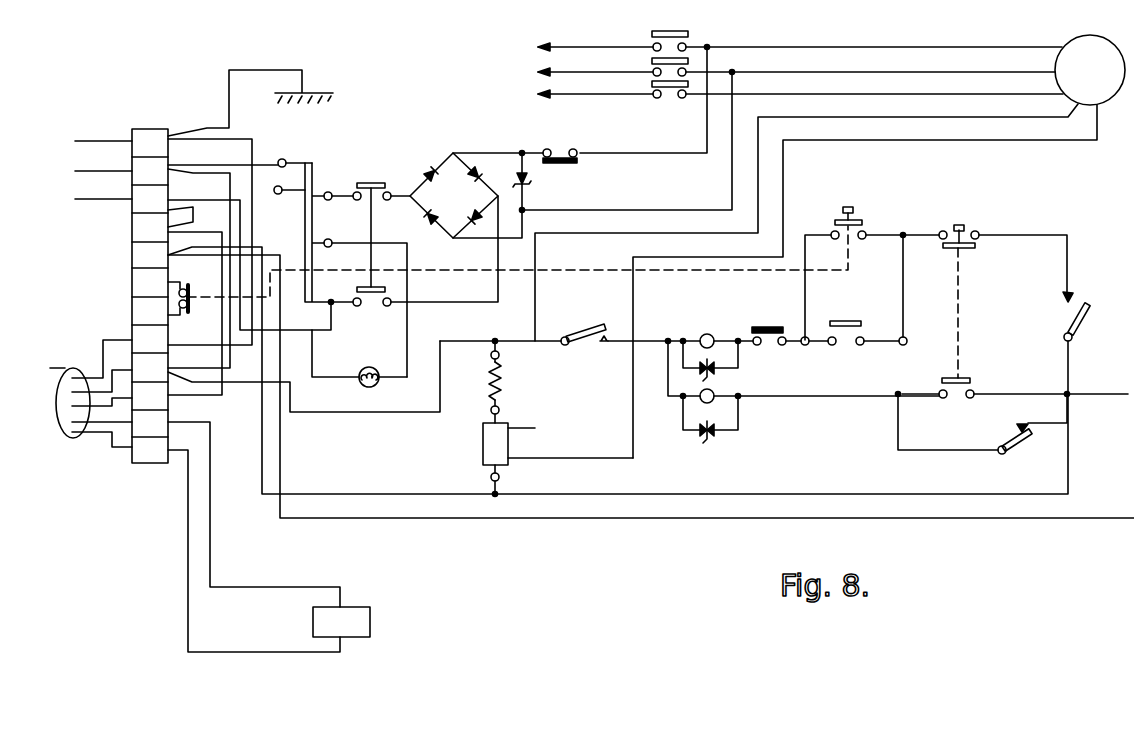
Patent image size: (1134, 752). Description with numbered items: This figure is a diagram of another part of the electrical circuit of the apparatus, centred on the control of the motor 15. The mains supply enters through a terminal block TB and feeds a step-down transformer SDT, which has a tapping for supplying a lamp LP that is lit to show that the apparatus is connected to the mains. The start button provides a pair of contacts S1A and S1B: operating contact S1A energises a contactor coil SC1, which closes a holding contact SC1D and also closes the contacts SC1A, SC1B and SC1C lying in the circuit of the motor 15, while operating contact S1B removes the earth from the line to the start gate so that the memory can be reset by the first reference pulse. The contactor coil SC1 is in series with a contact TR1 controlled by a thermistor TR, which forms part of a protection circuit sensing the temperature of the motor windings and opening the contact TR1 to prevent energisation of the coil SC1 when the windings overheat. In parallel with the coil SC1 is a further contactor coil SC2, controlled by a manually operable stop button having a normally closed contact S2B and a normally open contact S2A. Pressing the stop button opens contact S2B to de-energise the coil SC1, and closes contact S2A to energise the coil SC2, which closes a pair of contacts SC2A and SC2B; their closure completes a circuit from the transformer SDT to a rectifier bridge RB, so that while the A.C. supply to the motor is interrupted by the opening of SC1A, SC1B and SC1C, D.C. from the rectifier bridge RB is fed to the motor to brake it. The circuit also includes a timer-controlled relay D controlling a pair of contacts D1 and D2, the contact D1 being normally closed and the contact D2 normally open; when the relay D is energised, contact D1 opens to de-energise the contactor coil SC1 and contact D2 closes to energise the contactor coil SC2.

The terminal block TB is at (134, 296).
The contact S1B is at (175, 298).
The step-down transformer SDT is at (302, 203).
The contact SC2A is at (368, 224).
The contact SC2B is at (368, 309).
The rectifier bridge RB is at (493, 193).
The lamp LP is at (345, 400).
The contact SC1A is at (640, 41).
The contact SC1B is at (640, 65).
The contact SC1C is at (640, 88).
The motor 15 is at (1090, 70).
The contact S1A is at (865, 223).
The normally closed contact S2B is at (966, 227).
The holding contact SC1D is at (846, 321).
The contact D1 is at (1088, 316).
The contactor coil SC1 is at (734, 347).
The contactor coil SC2 is at (720, 408).
The contact TR1 is at (584, 346).
The thermistor TR is at (483, 448).
The normally open contact S2A is at (973, 377).
The contact D2 is at (1023, 446).
The timer-controlled relay D is at (341, 622).